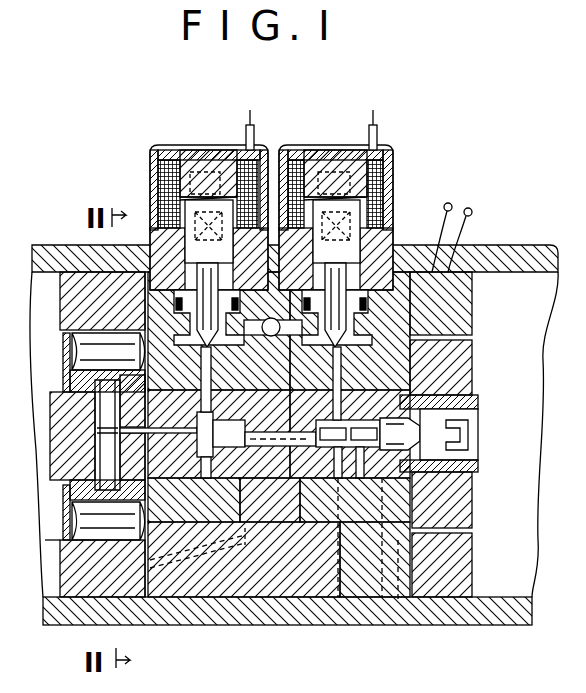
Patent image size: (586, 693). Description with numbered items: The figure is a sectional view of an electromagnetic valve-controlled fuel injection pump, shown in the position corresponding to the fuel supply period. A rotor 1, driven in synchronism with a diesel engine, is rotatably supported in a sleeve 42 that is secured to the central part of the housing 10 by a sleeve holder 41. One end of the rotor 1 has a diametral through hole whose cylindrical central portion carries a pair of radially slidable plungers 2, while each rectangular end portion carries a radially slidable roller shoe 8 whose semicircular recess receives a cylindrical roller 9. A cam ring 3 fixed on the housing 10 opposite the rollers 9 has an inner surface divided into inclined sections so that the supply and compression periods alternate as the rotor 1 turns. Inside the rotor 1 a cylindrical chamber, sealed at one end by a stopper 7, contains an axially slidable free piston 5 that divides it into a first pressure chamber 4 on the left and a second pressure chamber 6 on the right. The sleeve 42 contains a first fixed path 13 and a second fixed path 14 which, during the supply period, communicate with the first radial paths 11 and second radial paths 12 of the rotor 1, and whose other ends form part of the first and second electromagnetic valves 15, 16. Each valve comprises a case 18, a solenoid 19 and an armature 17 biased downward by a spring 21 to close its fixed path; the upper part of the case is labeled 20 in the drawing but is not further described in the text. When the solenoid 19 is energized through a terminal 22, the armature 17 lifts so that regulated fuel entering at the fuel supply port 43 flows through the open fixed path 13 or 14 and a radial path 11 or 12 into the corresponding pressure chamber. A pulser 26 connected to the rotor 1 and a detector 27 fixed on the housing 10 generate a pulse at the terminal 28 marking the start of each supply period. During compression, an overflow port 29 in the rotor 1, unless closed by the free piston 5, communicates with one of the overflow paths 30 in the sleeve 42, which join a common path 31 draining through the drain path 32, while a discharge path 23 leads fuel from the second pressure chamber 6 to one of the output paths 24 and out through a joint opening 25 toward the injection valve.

The rotor 1 is at (58, 494).
The plungers 2 is at (96, 404).
The cam ring 3 is at (60, 563).
The first pressure chamber 4 is at (197, 446).
The free piston 5 is at (288, 447).
The second pressure chamber 6 is at (325, 447).
The stopper 7 is at (402, 448).
The roller shoe 8 is at (70, 522).
The roller 9 is at (106, 540).
The housing 10 is at (50, 627).
The first radial paths 11 is at (200, 400).
The second radial paths 12 is at (346, 415).
The first fixed path 13 is at (203, 354).
The second fixed path 14 is at (345, 372).
The first electromagnetic valve 15 is at (203, 173).
The second electromagnetic valve 16 is at (363, 87).
The armature 17 is at (148, 310).
The case 18 is at (153, 218).
The solenoid 19 is at (153, 178).
The cover 20 is at (185, 150).
The spring 21 is at (200, 172).
The terminal 22 is at (254, 128).
The discharge path 23 is at (351, 470).
The output paths 24 is at (374, 537).
The joint opening 25 is at (398, 622).
The pulser 26 is at (473, 494).
The detector 27 is at (473, 558).
The terminal 28 is at (472, 211).
The overflow port 29 is at (249, 474).
The overflow paths 30 is at (252, 535).
The common path 31 is at (244, 548).
The drain path 32 is at (224, 548).
The sleeve holder 41 is at (402, 245).
The sleeve 42 is at (389, 342).
The fuel supply port 43 is at (271, 318).